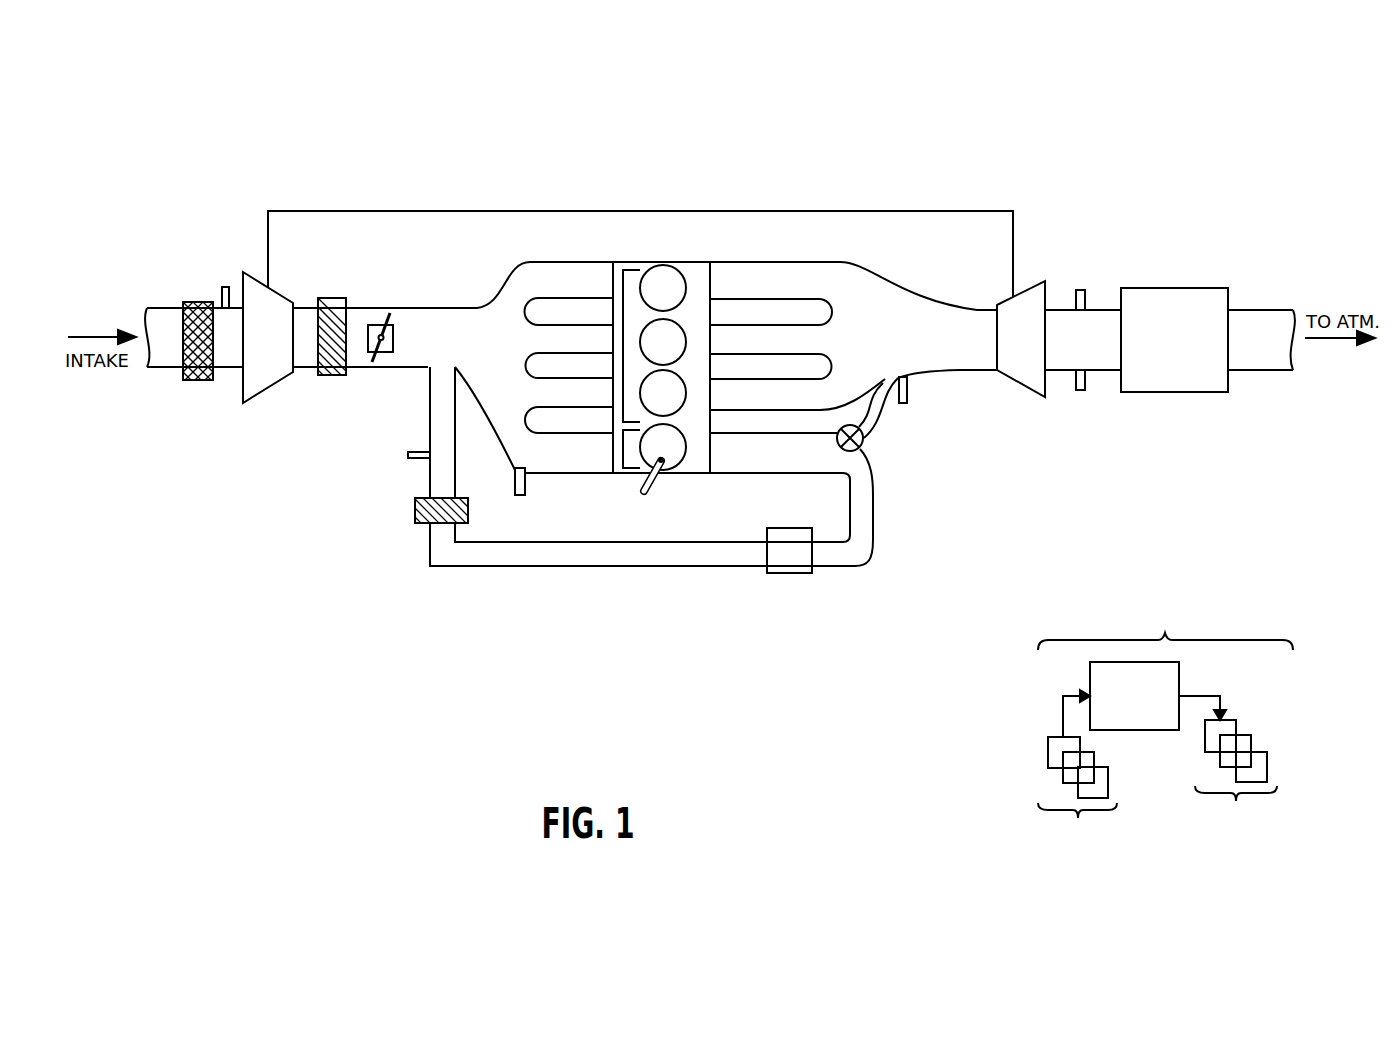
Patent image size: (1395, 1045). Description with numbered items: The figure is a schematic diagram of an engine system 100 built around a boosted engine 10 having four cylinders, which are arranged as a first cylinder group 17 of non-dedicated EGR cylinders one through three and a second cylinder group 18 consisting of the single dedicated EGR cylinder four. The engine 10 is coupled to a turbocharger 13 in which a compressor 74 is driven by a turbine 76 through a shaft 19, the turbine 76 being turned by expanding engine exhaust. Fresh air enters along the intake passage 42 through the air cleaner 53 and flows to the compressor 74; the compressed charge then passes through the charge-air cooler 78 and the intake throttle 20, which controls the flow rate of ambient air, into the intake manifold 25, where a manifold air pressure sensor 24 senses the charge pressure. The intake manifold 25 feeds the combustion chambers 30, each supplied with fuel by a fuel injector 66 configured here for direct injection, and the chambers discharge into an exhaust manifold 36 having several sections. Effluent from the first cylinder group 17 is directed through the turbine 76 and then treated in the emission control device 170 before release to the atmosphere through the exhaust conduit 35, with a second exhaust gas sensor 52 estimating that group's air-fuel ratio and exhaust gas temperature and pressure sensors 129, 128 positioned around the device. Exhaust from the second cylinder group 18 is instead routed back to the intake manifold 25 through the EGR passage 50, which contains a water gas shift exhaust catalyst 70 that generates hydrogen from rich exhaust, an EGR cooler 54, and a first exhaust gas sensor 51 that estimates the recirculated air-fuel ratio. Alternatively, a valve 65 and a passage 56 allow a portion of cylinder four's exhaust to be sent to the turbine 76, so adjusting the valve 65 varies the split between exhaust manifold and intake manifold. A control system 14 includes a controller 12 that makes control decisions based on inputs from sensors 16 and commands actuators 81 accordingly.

The engine system 100 is at (1259, 146).
The shaft 19 is at (598, 210).
The air cleaner 53 is at (198, 301).
The intake passage 42 is at (168, 368).
The compressor 74 is at (257, 349).
The charge-air cooler 78 is at (340, 298).
The intake throttle 20 is at (396, 338).
The turbocharger 13 is at (266, 414).
The intake manifold 25 is at (482, 355).
The engine 10 is at (696, 262).
The combustion chambers 30 is at (684, 277).
The first cylinder group 17 is at (632, 268).
The second cylinder group 18 is at (623, 458).
The manifold air pressure sensor 24 is at (512, 488).
The fuel injector 66 is at (655, 480).
The exhaust manifold 36 is at (851, 345).
The second exhaust gas sensor 52 is at (908, 405).
The passage 56 is at (880, 425).
The valve 65 is at (865, 445).
The exhaust catalyst 70 is at (778, 560).
The EGR passage 50 is at (682, 566).
The first exhaust gas sensor 51 is at (410, 458).
The EGR cooler 54 is at (422, 525).
The turbine 76 is at (1009, 352).
The exhaust gas temperature and pressure sensor 129 is at (1085, 290).
The exhaust gas temperature and pressure sensor 128 is at (1080, 392).
The emission control device 170 is at (1163, 288).
The exhaust conduit 35 is at (1270, 310).
The control system 14 is at (1165, 725).
The controller 12 is at (1134, 696).
The sensors 16 is at (1077, 800).
The actuators 81 is at (1236, 783).